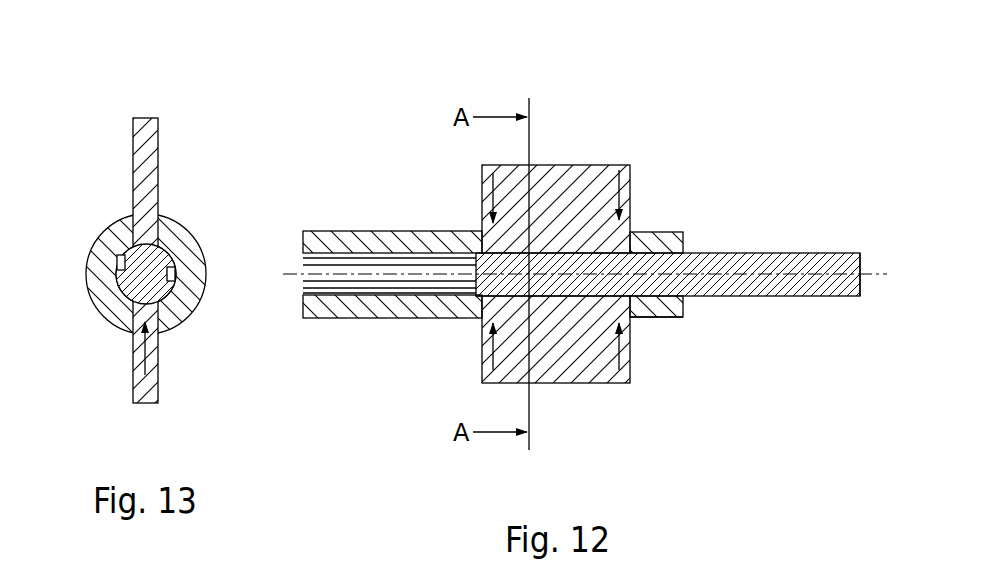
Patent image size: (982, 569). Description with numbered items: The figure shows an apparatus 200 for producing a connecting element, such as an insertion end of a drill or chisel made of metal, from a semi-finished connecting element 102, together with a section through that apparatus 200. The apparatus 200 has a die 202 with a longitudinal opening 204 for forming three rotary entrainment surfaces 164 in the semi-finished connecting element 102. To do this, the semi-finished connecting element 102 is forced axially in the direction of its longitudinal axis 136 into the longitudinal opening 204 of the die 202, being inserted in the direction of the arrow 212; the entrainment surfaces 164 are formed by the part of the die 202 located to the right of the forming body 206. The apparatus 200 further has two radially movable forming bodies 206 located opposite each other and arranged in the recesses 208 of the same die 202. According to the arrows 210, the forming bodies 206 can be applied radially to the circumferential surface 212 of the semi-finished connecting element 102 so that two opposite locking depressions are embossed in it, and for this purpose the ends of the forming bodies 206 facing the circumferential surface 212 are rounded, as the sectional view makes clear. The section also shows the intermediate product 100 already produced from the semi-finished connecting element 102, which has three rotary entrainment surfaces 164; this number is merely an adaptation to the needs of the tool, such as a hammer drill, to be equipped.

In FIG. 13, the intermediate product 100 is at (177, 303).
In FIG. 12, the semi-finished connecting element 102 is at (820, 285).
In FIG. 12, the longitudinal axis 136 is at (870, 273).
In FIG. 13, the rotary entrainment surfaces 164 is at (172, 270).
In FIG. 12, the apparatus 200 is at (408, 128).
In FIG. 13, the die 202 is at (178, 233).
In FIG. 12, the die 202 is at (357, 236).
In FIG. 12, the longitudinal opening 204 is at (698, 301).
In FIG. 13, the forming bodies 206 is at (153, 133).
In FIG. 12, the forming bodies 206 is at (573, 323).
In FIG. 12, the recesses 208 is at (478, 318).
In FIG. 13, the arrows 210 is at (157, 357).
In FIG. 12, the arrows 210 is at (484, 191).
In FIG. 12, the circumferential surface 212 is at (822, 157).